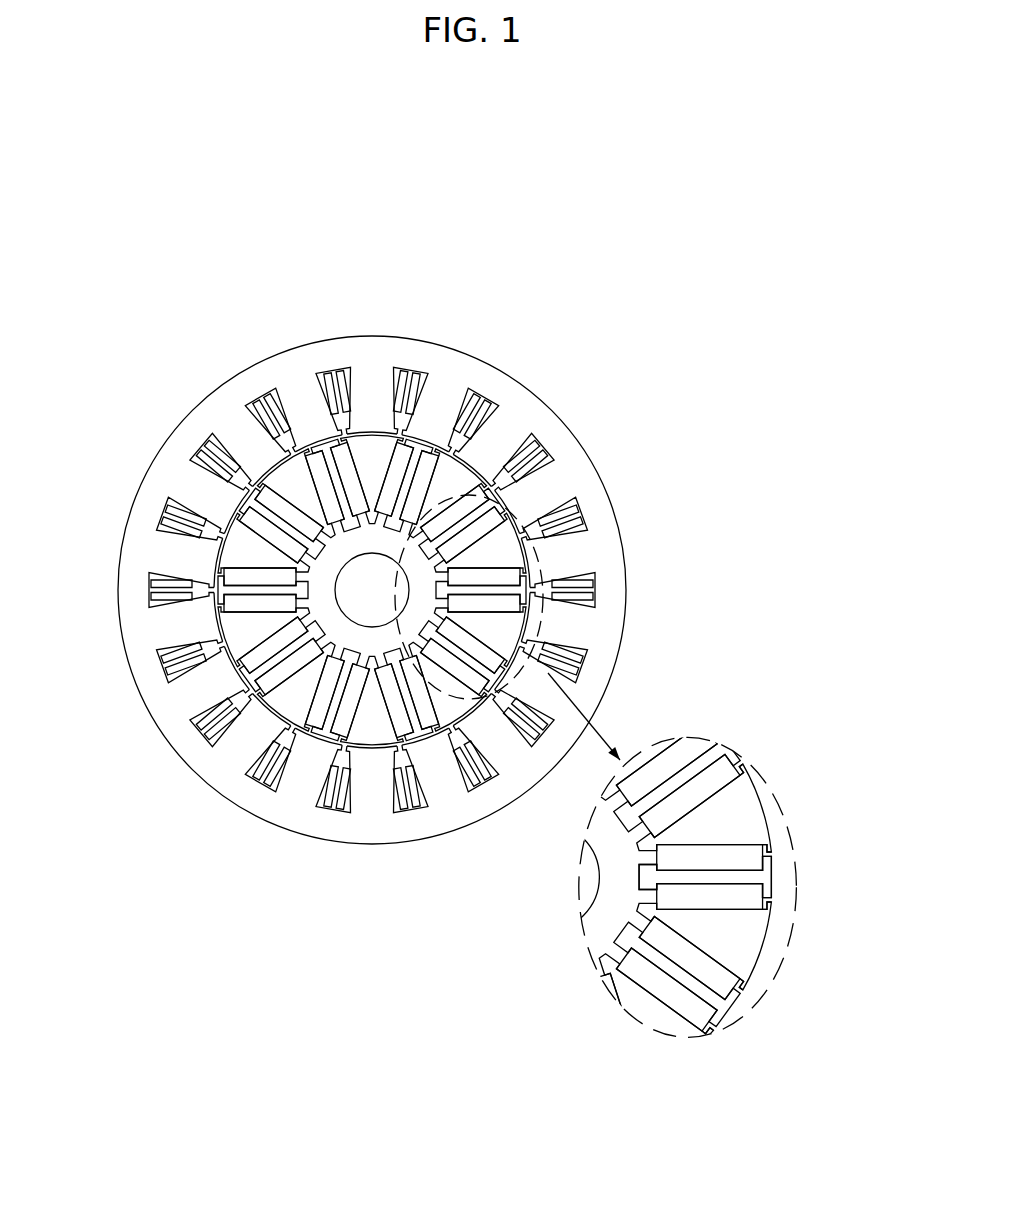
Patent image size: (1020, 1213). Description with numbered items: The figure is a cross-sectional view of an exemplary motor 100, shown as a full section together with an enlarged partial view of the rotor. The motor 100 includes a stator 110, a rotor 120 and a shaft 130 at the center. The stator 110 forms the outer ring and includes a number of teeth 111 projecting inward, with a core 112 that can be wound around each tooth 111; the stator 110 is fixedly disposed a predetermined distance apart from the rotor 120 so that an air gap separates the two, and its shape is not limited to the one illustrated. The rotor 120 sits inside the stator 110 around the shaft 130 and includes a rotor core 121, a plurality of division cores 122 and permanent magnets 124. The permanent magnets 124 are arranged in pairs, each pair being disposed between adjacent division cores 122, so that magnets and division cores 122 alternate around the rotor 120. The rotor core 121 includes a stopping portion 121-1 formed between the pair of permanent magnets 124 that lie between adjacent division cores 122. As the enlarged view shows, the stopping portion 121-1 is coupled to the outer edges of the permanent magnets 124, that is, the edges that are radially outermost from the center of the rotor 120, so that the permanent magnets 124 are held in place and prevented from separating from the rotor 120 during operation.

The motor 100 is at (464, 558).
The stator 110 is at (381, 590).
The tooth 111 is at (591, 598).
The core 112 is at (372, 556).
The rotor 120 is at (294, 590).
The rotor core 121 is at (545, 876).
The stopping portion 121-1 is at (597, 877).
The division core 122 is at (584, 876).
The permanent magnet 124 is at (544, 877).
The shaft 130 is at (296, 485).